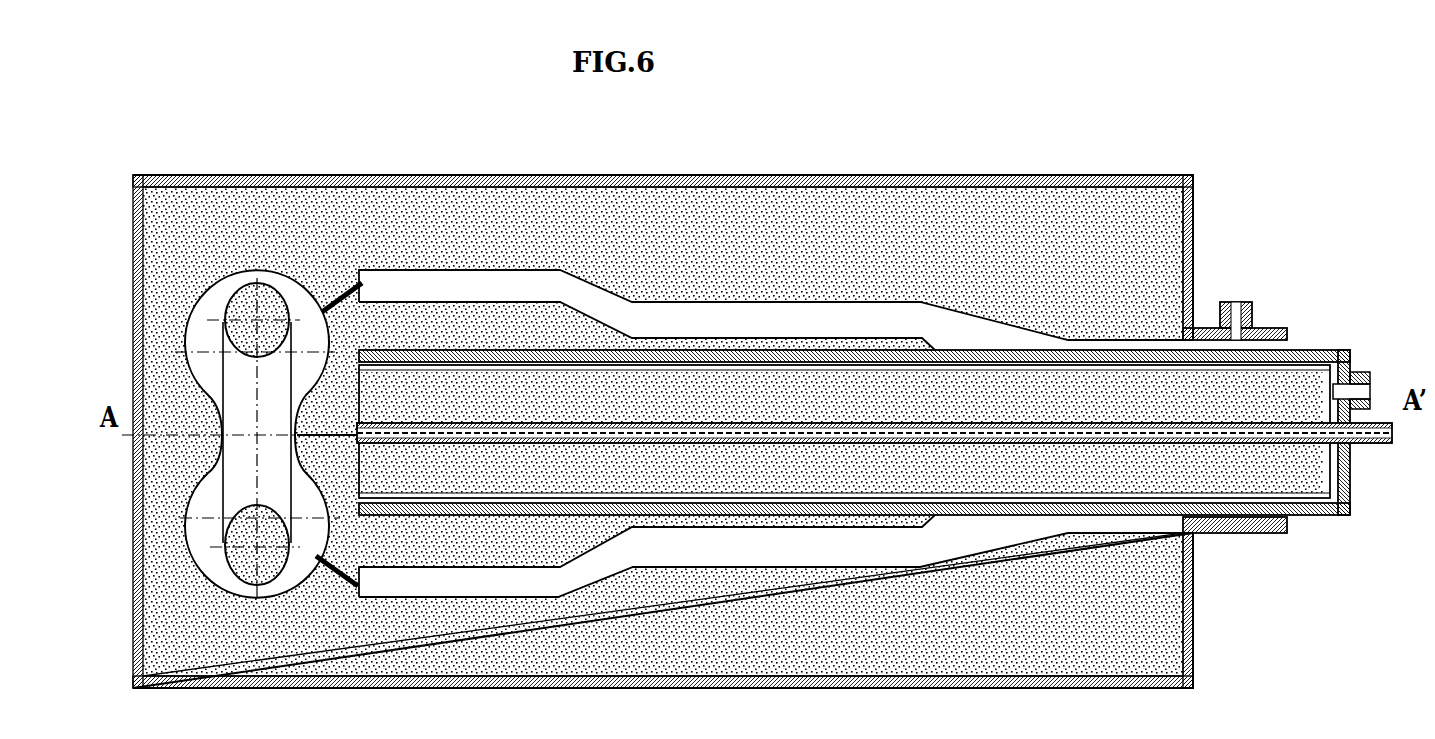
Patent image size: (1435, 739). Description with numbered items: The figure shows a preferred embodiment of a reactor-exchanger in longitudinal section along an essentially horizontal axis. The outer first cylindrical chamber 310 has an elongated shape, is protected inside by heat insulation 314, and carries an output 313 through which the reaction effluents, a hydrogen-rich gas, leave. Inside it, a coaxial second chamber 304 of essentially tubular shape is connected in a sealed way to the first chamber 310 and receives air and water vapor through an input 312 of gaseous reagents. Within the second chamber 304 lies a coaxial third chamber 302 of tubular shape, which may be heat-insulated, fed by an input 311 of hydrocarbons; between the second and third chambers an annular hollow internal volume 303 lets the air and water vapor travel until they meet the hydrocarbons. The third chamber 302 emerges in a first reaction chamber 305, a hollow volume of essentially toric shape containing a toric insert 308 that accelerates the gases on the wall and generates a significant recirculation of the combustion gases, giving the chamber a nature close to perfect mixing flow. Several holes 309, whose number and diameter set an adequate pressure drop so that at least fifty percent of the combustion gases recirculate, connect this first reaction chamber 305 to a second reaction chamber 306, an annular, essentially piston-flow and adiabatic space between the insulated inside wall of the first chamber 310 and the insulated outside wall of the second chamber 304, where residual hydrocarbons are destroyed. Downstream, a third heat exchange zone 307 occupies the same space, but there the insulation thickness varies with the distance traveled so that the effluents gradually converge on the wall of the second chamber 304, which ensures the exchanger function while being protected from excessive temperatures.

The third chamber 302 is at (1192, 557).
The annular hollow internal volume 303 is at (558, 373).
The second chamber 304 is at (1100, 364).
The first reaction chamber 305 is at (245, 408).
The second reaction chamber 306 is at (444, 283).
The third heat exchange zone 307 is at (787, 315).
The toric insert 308 is at (248, 303).
The holes 309 is at (320, 312).
The first cylindrical chamber 310 is at (1027, 184).
The input of hydrocarbons 311 is at (1390, 445).
The input of gaseous reagents 312 is at (1352, 372).
The output of effluents 313 is at (1237, 305).
The heat insulation 314 is at (738, 273).